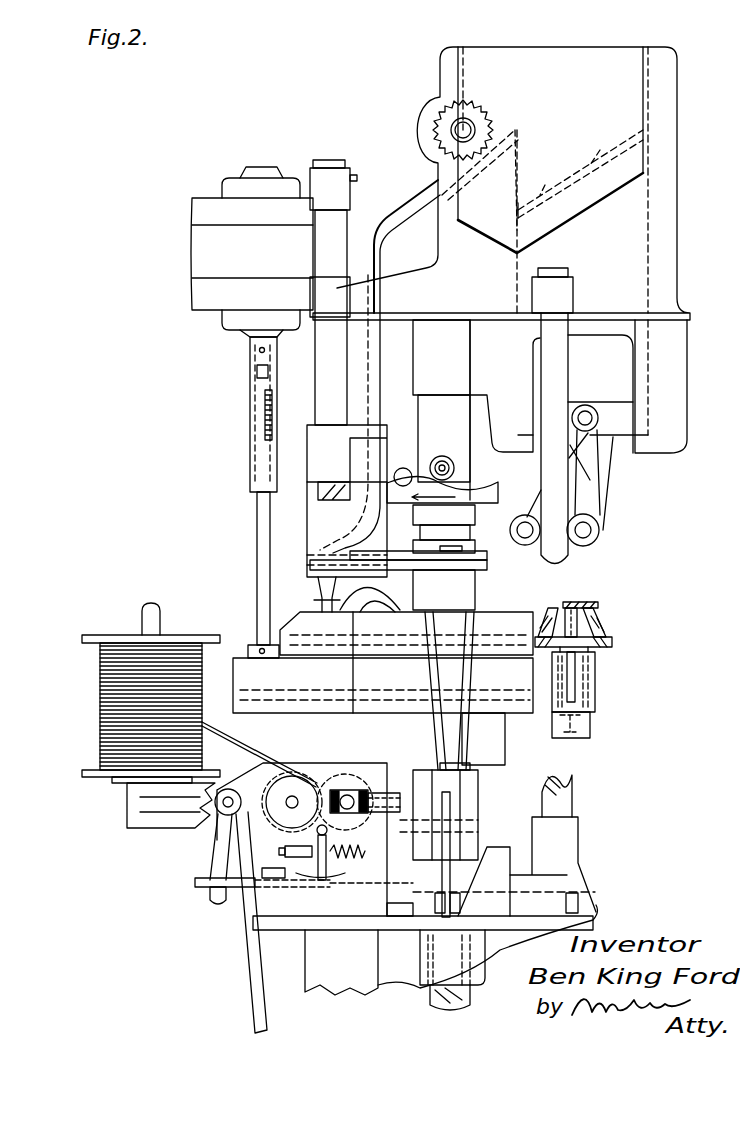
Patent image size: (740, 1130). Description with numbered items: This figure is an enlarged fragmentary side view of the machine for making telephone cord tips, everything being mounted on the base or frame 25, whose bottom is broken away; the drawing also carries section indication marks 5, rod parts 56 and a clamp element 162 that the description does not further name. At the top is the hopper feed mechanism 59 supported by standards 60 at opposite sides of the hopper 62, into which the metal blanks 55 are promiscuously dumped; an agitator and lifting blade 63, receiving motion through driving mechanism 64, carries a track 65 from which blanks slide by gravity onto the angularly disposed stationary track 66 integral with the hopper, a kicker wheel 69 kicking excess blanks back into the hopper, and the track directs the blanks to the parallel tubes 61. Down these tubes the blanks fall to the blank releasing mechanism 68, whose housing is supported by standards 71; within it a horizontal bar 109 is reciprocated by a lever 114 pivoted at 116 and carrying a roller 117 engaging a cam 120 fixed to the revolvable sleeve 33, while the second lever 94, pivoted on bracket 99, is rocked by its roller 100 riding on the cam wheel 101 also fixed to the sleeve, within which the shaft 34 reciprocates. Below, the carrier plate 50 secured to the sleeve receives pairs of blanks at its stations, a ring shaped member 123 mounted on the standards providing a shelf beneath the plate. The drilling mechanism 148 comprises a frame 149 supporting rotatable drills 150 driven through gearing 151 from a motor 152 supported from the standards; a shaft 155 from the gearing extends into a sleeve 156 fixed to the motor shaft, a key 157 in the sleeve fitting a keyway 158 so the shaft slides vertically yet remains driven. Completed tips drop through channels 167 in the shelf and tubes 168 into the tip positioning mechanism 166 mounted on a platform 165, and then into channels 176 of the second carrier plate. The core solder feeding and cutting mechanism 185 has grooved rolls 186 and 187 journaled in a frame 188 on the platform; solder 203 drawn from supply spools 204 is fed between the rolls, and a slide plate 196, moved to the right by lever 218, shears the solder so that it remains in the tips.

The hopper feed mechanism 59 is at (640, 123).
The hopper 62 is at (473, 78).
The stationary runway or track 66 is at (510, 128).
The agitator and lifting blade 63 is at (600, 150).
The runway or track 65 is at (546, 184).
The kicker wheel 69 is at (432, 116).
The parallel tubes 61 is at (407, 203).
The motor 152 is at (208, 240).
The sleeve 156 is at (250, 462).
The key 157 is at (262, 378).
The keyway 158 is at (265, 430).
The shaft 155 is at (260, 515).
The standards 71 is at (315, 398).
The metal blanks 55 is at (373, 450).
The blank releasing mechanism 68 is at (305, 521).
The bar 109 is at (317, 563).
The section line 5 is at (278, 583).
The second lever 94 is at (420, 445).
The revolvable sleeve 33 is at (437, 420).
The bracket 99 is at (405, 468).
The roller 100 is at (443, 453).
The cam wheel 101 is at (480, 490).
The roller 117 is at (468, 560).
The lever 114 is at (369, 599).
The pivot 116 is at (386, 599).
The cam 120 is at (512, 530).
The standards 60 is at (562, 378).
The driving mechanism 64 is at (575, 470).
The carrier plate 50 is at (520, 610).
The channels 167 is at (530, 658).
The tubes 168 is at (470, 665).
The rod 56 is at (463, 610).
The gearing 151 is at (517, 727).
The rotatable drills 150 is at (612, 630).
The ring shaped member 123 is at (612, 645).
The drilling mechanism 148 is at (604, 693).
The frame 149 is at (590, 715).
The clamp bolt 162 is at (595, 598).
The supply spools 204 is at (82, 643).
The core solder feeding and cutting mechanism 185 is at (265, 840).
The solder 203 is at (293, 770).
The frame 188 is at (318, 775).
The grooved roll 186 is at (338, 772).
The grooved roll 187 is at (350, 790).
The slide plate 196 is at (210, 885).
The channels 176 is at (325, 902).
The lever 218 is at (250, 965).
The tip positioning mechanism 166 is at (390, 858).
The base or frame 25 is at (585, 870).
The platform 165 is at (393, 922).
The shaft 34 is at (445, 1010).